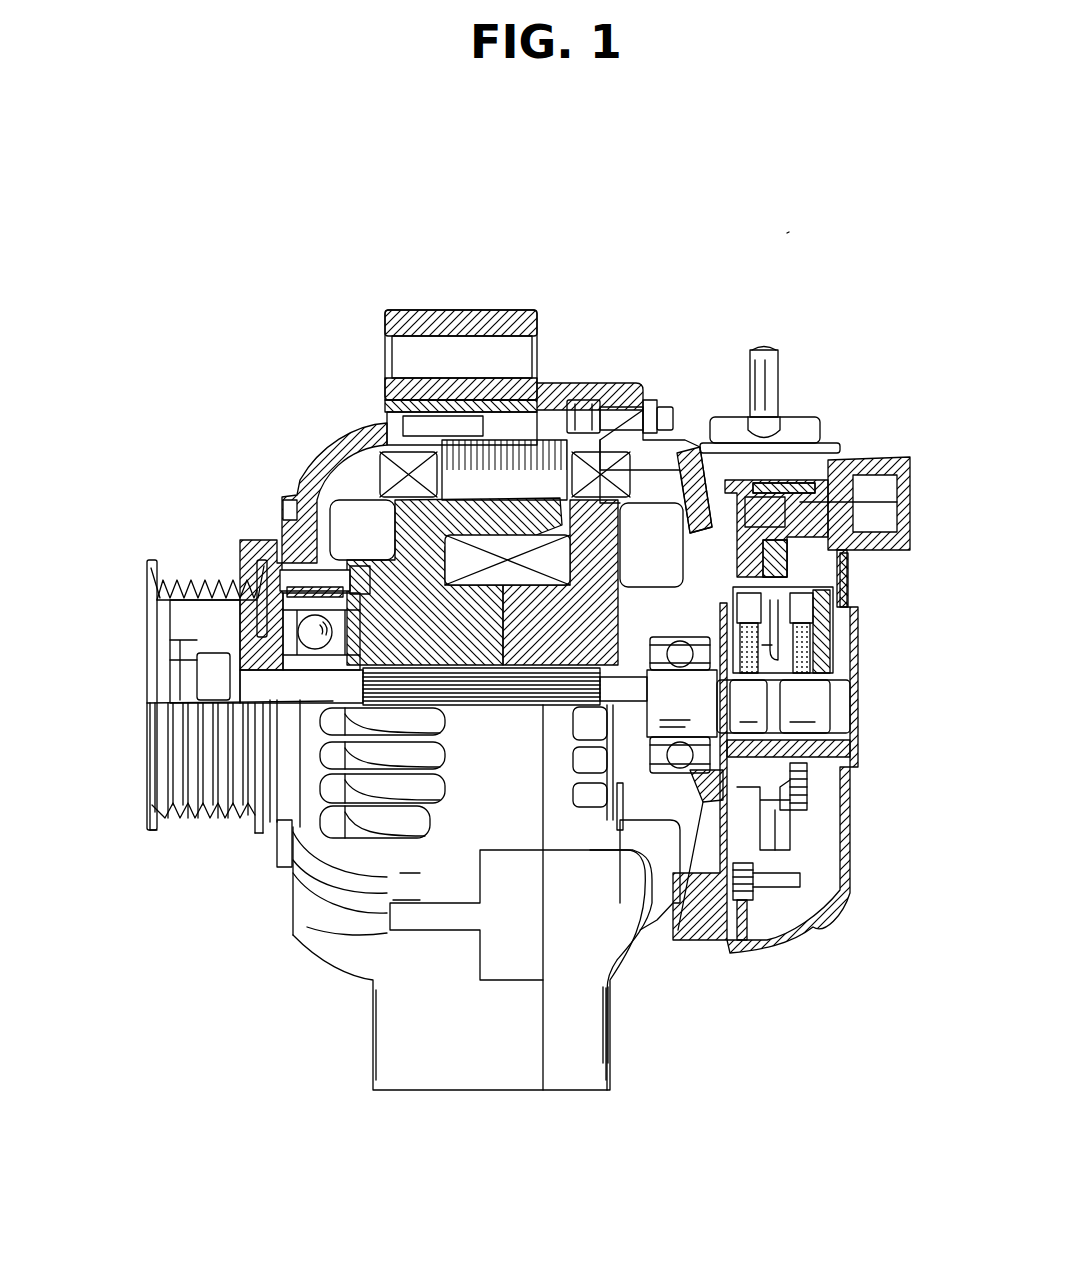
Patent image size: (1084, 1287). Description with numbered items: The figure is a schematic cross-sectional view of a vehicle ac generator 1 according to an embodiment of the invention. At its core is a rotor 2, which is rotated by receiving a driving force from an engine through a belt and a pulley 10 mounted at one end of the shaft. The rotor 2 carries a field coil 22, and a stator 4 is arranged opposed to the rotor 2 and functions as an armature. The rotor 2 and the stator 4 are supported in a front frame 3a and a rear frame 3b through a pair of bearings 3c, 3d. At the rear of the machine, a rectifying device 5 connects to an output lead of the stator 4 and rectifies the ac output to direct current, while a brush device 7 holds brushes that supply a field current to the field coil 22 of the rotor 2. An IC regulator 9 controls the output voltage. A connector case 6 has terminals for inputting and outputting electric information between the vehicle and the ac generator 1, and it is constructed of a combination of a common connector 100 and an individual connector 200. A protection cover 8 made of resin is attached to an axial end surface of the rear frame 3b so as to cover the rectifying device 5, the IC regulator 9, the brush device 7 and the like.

The vehicle ac generator 1 is at (788, 233).
The rotor 2 is at (497, 492).
The field coil 22 is at (515, 545).
The stator 4 is at (548, 442).
The front frame 3a is at (482, 1088).
The rear frame 3b is at (563, 1088).
The bearing 3c is at (290, 590).
The bearing 3d is at (690, 740).
The rectifying device 5 is at (770, 912).
The connector case 6 is at (893, 450).
The brush device 7 is at (840, 616).
The protection cover 8 is at (820, 918).
The IC regulator 9 is at (832, 458).
The pulley 10 is at (148, 832).
The common connector 100 is at (775, 535).
The individual connector 200 is at (735, 525).